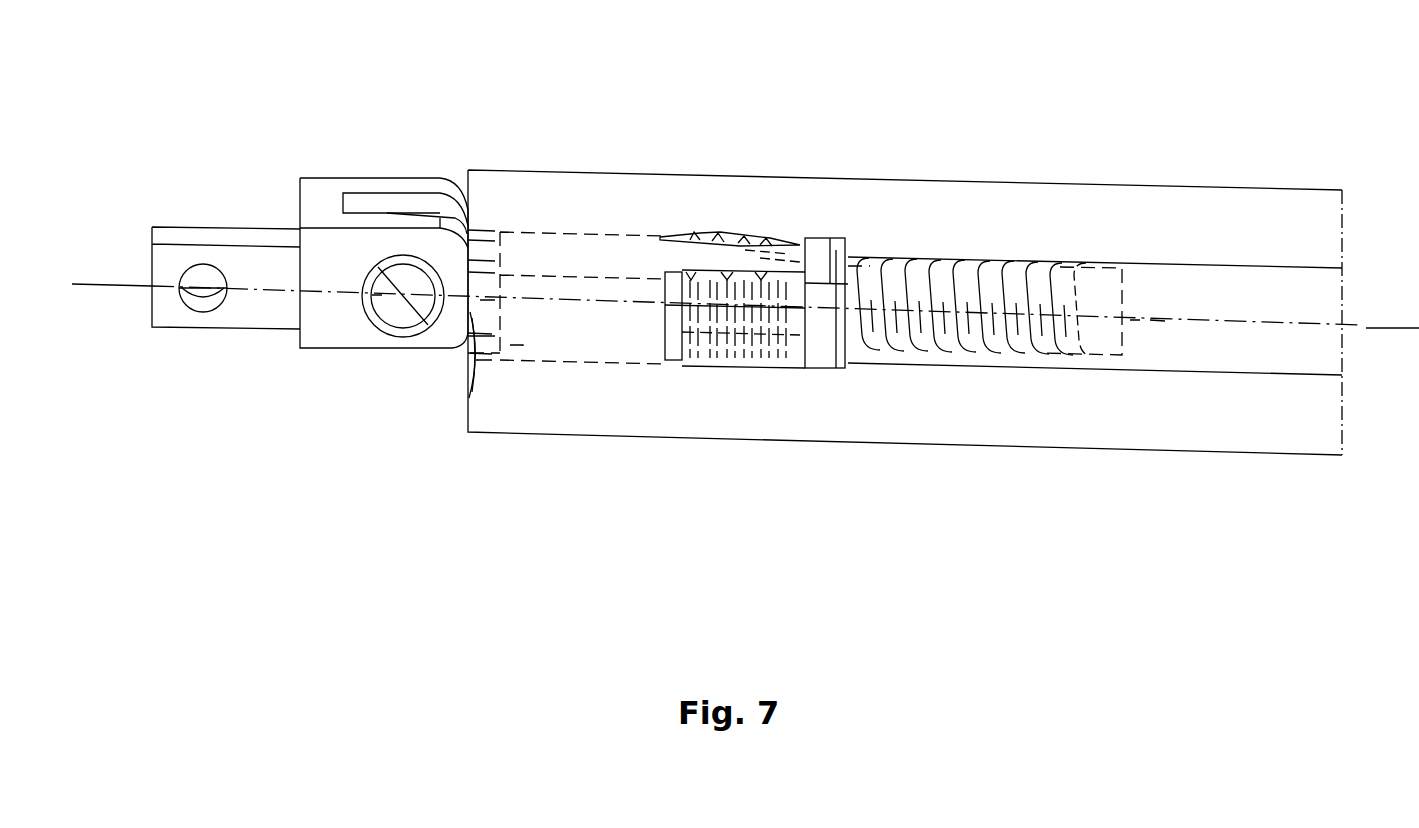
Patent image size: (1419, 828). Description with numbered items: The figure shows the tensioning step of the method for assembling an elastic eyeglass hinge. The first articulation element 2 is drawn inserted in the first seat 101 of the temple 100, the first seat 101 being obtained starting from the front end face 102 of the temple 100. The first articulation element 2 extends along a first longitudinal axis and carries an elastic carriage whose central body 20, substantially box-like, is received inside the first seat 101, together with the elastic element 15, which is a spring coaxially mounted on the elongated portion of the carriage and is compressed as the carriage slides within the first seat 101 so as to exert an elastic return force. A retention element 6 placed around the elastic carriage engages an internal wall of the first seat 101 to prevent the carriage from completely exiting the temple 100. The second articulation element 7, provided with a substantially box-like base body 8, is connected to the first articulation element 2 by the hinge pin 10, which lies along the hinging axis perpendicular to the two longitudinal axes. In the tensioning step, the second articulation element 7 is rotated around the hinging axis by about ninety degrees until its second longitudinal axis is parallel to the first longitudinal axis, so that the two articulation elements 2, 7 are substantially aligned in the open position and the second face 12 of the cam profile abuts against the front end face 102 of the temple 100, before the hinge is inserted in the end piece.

The second articulation element 7 is at (214, 134).
The base body 8 is at (241, 312).
The hinge pin 10 is at (407, 293).
The second face 12 is at (467, 352).
The front end face 102 is at (462, 172).
The temple 100 is at (1236, 208).
The first articulation element 2 is at (690, 208).
The central body 20 is at (589, 336).
The retention element 6 is at (733, 390).
The elastic element 15 is at (991, 250).
The first seat 101 is at (1118, 357).